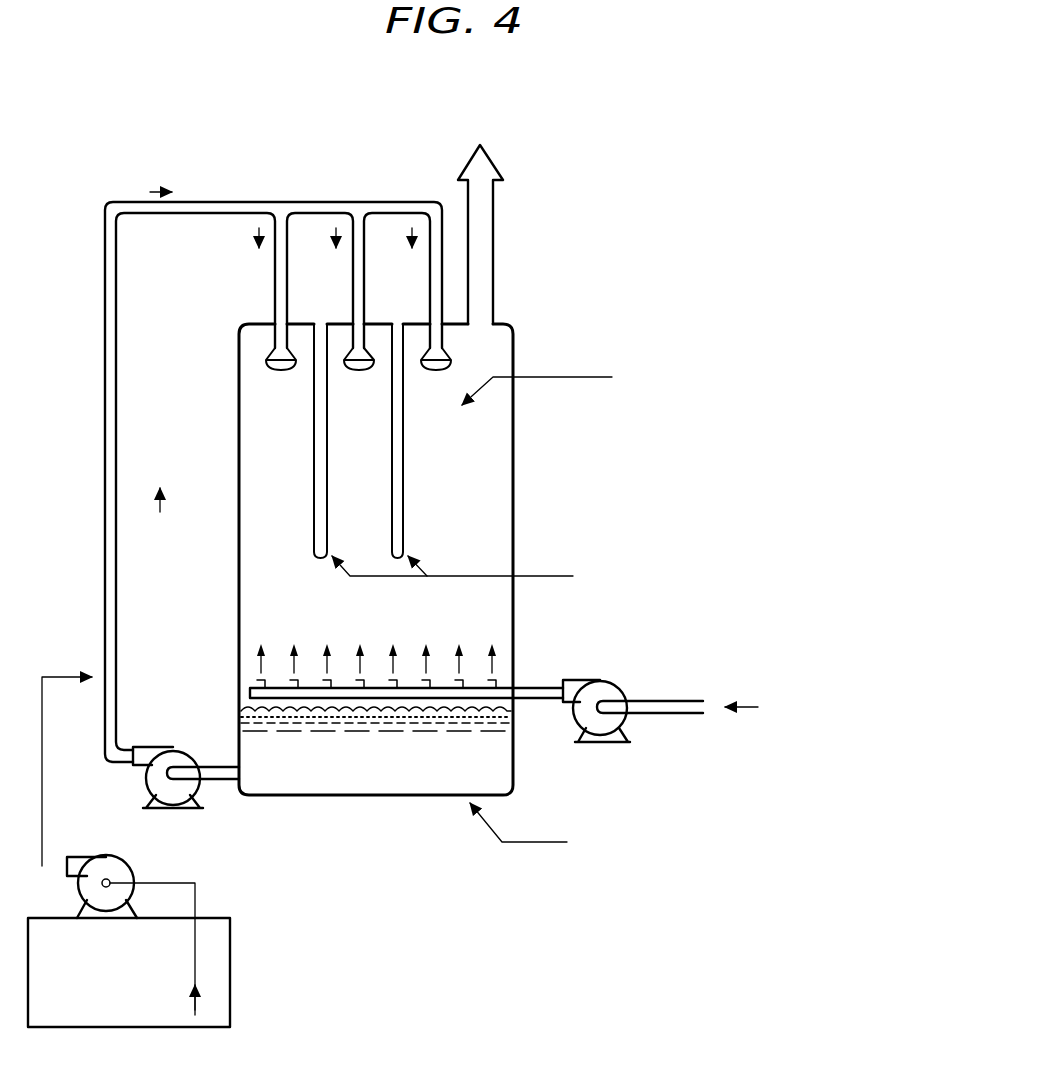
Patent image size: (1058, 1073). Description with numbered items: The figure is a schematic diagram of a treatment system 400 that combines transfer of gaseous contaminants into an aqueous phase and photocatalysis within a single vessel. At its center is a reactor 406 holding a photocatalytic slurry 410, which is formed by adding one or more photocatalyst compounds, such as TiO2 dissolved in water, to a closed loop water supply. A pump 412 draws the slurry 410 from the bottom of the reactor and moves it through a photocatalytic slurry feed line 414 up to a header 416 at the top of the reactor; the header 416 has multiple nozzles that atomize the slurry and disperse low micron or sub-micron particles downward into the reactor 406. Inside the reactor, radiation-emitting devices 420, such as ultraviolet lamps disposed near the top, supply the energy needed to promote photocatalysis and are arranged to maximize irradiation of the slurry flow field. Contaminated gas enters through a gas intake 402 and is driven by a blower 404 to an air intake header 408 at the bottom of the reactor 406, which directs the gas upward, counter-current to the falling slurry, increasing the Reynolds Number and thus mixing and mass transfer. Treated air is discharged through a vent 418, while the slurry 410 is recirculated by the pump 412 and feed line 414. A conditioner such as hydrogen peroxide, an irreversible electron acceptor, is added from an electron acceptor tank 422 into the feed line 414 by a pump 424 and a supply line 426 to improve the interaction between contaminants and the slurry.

The treatment system 400 is at (238, 115).
The gas intake 402 is at (665, 715).
The blower 404 is at (617, 683).
The reactor 406 is at (513, 352).
The air intake header 408 is at (513, 684).
The photocatalytic slurry 410 is at (331, 797).
The pump 412 is at (170, 748).
The photocatalytic slurry feed line 414 is at (105, 428).
The header 416 is at (430, 314).
The vent 418 is at (493, 222).
The radiation-emitting devices 420 is at (314, 527).
The electron acceptor tank 422 is at (230, 975).
The pump 424 is at (97, 857).
The supply line 426 is at (63, 677).